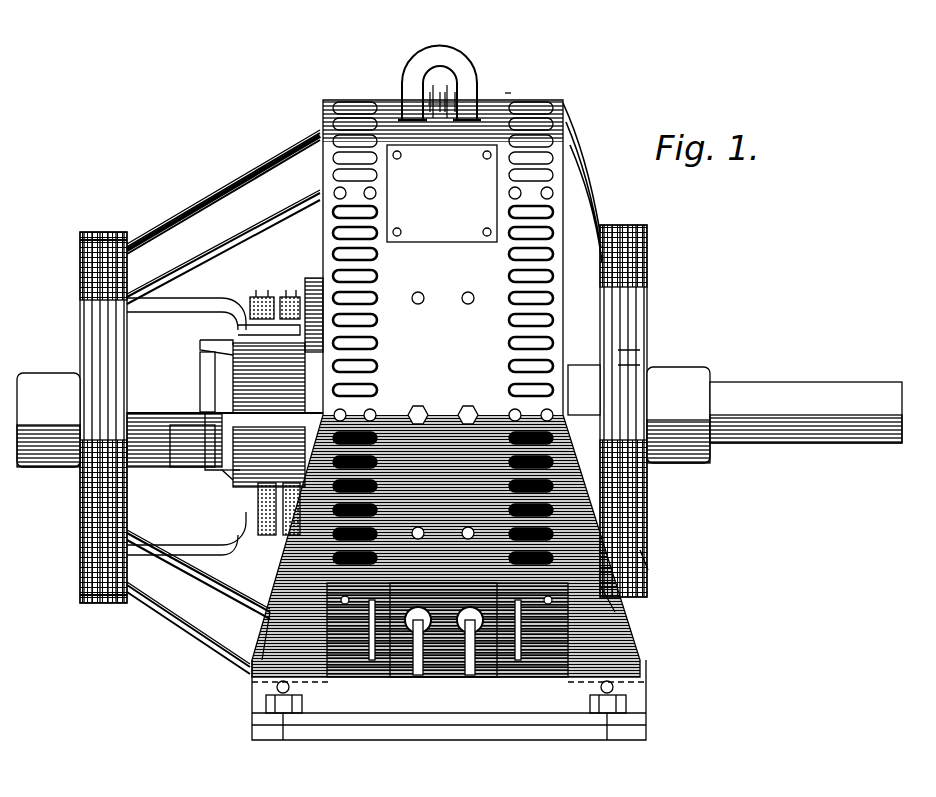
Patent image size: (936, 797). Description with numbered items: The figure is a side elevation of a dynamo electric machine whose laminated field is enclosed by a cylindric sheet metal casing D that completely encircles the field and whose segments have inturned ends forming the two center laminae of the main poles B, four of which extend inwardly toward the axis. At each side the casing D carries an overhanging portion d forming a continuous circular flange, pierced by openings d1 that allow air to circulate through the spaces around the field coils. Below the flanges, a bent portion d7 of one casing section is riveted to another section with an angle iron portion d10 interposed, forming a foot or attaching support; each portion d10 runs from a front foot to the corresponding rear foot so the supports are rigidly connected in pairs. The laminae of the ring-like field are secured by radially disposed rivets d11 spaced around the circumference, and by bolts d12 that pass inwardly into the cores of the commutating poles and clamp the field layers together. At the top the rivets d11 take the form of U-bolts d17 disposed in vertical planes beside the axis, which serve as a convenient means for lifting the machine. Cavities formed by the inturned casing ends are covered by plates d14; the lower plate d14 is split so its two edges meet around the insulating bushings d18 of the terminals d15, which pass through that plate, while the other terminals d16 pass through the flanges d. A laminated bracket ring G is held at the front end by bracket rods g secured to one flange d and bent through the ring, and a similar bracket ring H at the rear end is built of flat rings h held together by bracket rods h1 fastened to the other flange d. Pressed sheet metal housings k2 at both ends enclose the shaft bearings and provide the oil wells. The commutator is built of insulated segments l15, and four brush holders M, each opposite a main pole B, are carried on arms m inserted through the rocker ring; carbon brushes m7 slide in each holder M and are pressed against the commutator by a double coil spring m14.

The overhanging portion d is at (325, 100).
The opening d1 is at (342, 162).
The portion of casing section d7 is at (262, 660).
The angle iron portion d10 is at (451, 716).
The rivet d11 is at (465, 293).
The bolt d12 is at (447, 72).
The plate d14 is at (480, 194).
The terminal d15 is at (425, 676).
The terminal d16 is at (371, 680).
The U-bolt d17 is at (452, 92).
The insulating bushing d18 is at (508, 677).
The cylindric sheet metal casing D is at (509, 81).
The main pole B is at (325, 249).
The bracket ring G is at (85, 270).
The bracket rod g is at (207, 257).
The bracket ring H is at (648, 287).
The flat ring h is at (618, 363).
The bracket rod h1 is at (586, 246).
The sheet metal housing k2 is at (48, 470).
The commutator segment l15 is at (228, 478).
The brush holder M is at (240, 338).
The arm m is at (208, 305).
The carbon brush m7 is at (288, 297).
The double coil spring m14 is at (246, 333).